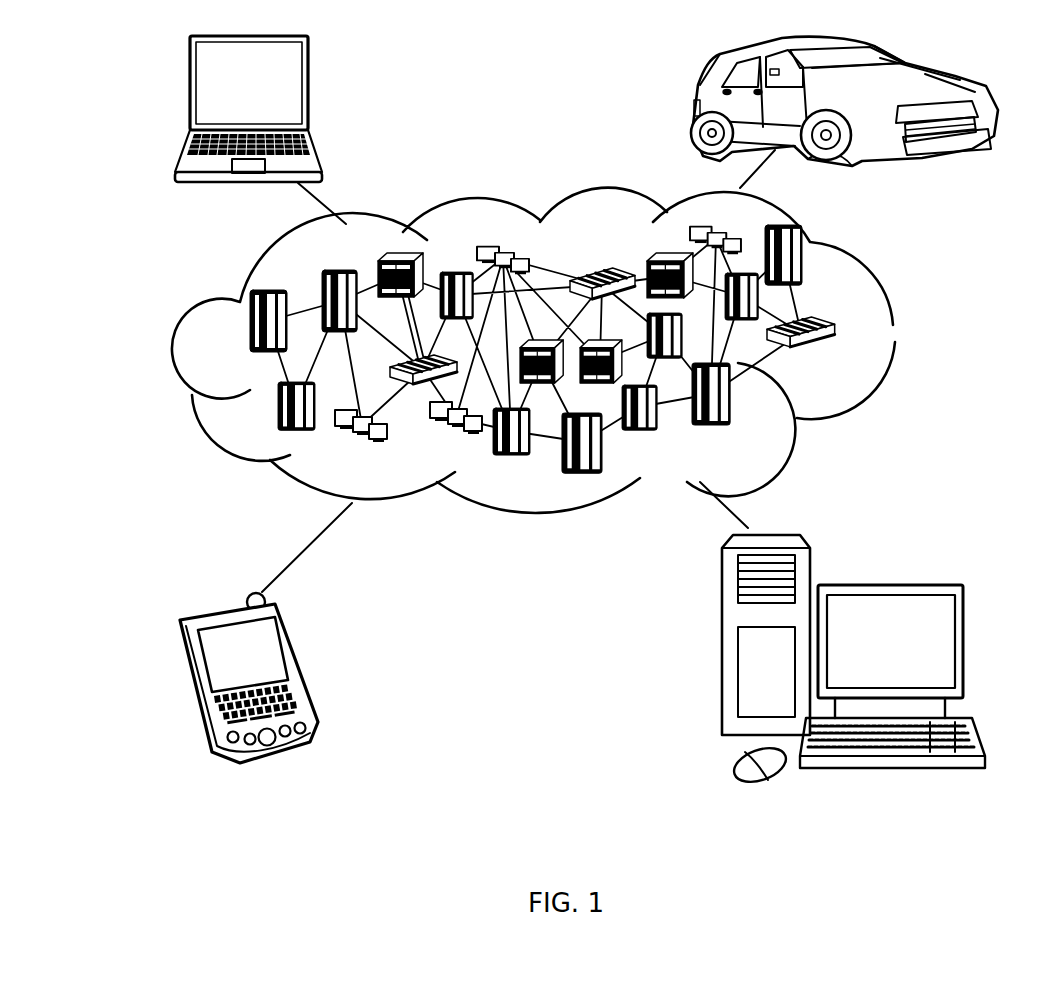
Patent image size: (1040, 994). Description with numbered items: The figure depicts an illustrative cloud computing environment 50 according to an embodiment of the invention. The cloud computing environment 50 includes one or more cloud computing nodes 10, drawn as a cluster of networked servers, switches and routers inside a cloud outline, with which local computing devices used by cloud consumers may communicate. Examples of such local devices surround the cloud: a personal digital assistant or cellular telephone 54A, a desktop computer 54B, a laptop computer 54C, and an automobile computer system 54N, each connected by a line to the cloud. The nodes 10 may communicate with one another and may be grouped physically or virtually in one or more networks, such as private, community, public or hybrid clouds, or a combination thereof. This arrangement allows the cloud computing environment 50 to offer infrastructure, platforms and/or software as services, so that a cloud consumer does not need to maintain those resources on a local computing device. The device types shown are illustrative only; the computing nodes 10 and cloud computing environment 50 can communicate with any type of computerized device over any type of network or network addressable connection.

The cloud computing nodes 10 is at (846, 356).
The cloud computing environment 50 is at (890, 329).
The personal digital assistant or cellular telephone 54A is at (300, 669).
The desktop computer 54B is at (888, 585).
The laptop computer 54C is at (310, 91).
The automobile computer system 54N is at (694, 104).